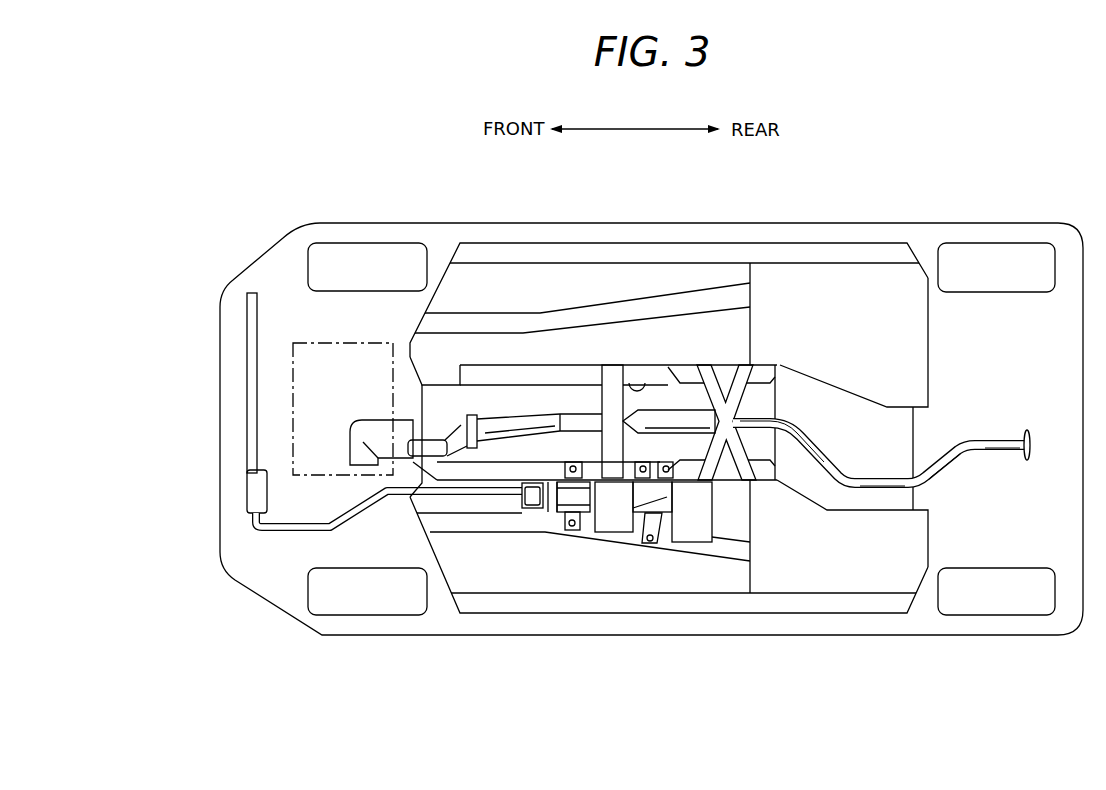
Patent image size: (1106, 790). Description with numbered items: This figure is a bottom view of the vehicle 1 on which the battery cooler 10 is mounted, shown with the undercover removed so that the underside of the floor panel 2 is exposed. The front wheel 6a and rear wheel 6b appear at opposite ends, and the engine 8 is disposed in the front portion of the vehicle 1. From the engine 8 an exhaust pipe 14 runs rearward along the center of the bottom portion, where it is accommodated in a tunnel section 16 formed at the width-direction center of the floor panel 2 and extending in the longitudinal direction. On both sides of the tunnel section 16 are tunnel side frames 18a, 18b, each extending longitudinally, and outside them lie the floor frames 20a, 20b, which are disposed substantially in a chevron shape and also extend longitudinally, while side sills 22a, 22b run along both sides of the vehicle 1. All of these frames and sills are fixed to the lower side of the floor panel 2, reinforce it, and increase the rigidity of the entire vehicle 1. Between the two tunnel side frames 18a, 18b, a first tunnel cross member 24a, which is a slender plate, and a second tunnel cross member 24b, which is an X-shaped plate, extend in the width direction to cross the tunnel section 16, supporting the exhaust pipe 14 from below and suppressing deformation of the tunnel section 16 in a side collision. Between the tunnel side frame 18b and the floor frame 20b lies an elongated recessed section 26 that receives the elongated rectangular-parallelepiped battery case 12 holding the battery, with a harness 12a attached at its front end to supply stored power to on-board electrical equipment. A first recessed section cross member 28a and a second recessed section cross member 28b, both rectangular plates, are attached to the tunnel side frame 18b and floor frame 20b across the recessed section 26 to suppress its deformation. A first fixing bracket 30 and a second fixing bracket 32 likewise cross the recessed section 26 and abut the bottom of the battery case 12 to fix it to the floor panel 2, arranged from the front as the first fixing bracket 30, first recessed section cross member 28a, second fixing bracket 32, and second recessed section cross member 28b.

The vehicle 1 is at (886, 160).
The floor panel 2 is at (808, 398).
The front wheel 6a is at (366, 253).
The rear wheel 6b is at (967, 253).
The engine 8 is at (303, 343).
The battery cooler 10 is at (558, 540).
The battery case 12 is at (538, 510).
The harness 12a is at (288, 532).
The exhaust pipe 14 is at (1000, 433).
The tunnel section 16 is at (627, 367).
The tunnel side frame 18a is at (565, 376).
The tunnel side frame 18b is at (730, 470).
The floor frame 20a is at (538, 315).
The floor frame 20b is at (610, 538).
The side sill 22a is at (497, 252).
The side sill 22b is at (513, 603).
The first tunnel cross member 24a is at (613, 373).
The second tunnel cross member 24b is at (718, 383).
The elongated recessed section 26 is at (487, 500).
The first recessed section cross member 28a is at (623, 537).
The second recessed section cross member 28b is at (703, 543).
The first fixing bracket 30 is at (563, 497).
The second fixing bracket 32 is at (667, 497).